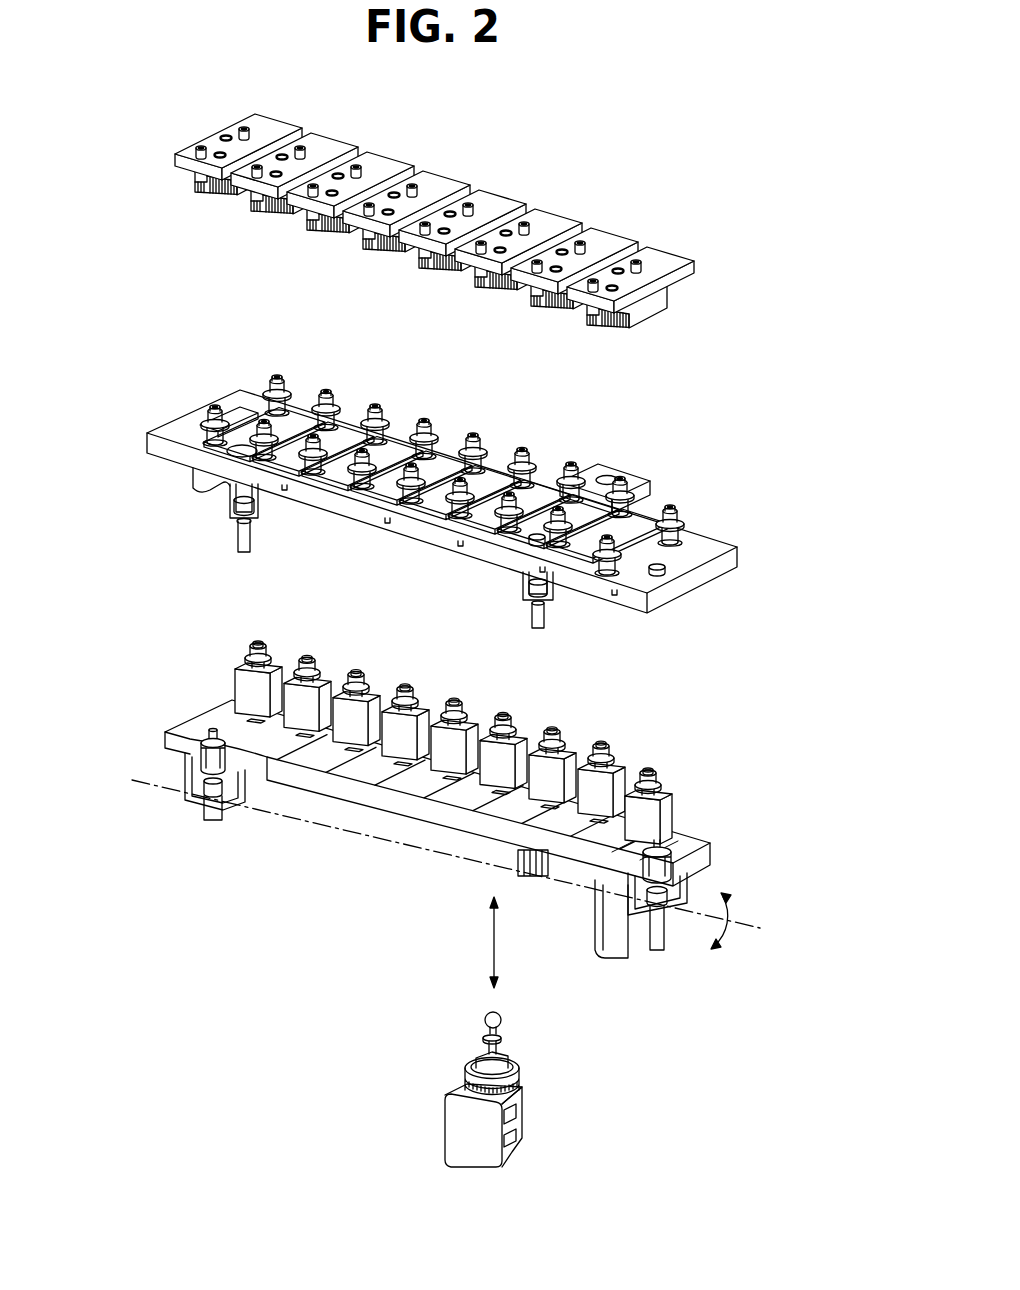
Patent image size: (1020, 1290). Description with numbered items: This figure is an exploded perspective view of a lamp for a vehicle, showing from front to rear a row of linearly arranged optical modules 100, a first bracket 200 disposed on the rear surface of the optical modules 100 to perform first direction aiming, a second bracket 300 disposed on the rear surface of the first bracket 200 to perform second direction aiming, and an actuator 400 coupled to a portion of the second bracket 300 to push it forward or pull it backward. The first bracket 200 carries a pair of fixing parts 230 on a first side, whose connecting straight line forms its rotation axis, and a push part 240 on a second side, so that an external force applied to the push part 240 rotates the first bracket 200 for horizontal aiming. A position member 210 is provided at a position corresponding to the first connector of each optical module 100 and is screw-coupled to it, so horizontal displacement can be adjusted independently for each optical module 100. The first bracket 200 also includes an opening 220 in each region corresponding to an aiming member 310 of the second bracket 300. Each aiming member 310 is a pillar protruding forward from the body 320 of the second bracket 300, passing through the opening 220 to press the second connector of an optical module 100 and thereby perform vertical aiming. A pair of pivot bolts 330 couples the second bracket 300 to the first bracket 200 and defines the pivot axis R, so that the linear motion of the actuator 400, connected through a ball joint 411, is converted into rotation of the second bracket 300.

The optical module 100 is at (513, 196).
The first bracket 200 is at (435, 489).
The position member 210 is at (516, 447).
The opening 220 is at (340, 438).
The fixing part 230 is at (244, 551).
The push part 240 is at (633, 477).
The second bracket 300 is at (434, 797).
The aiming member 310 is at (411, 716).
The body 320 is at (683, 840).
The pivot bolt 330 is at (217, 812).
The actuator 400 is at (483, 1089).
The ball joint 411 is at (504, 1022).